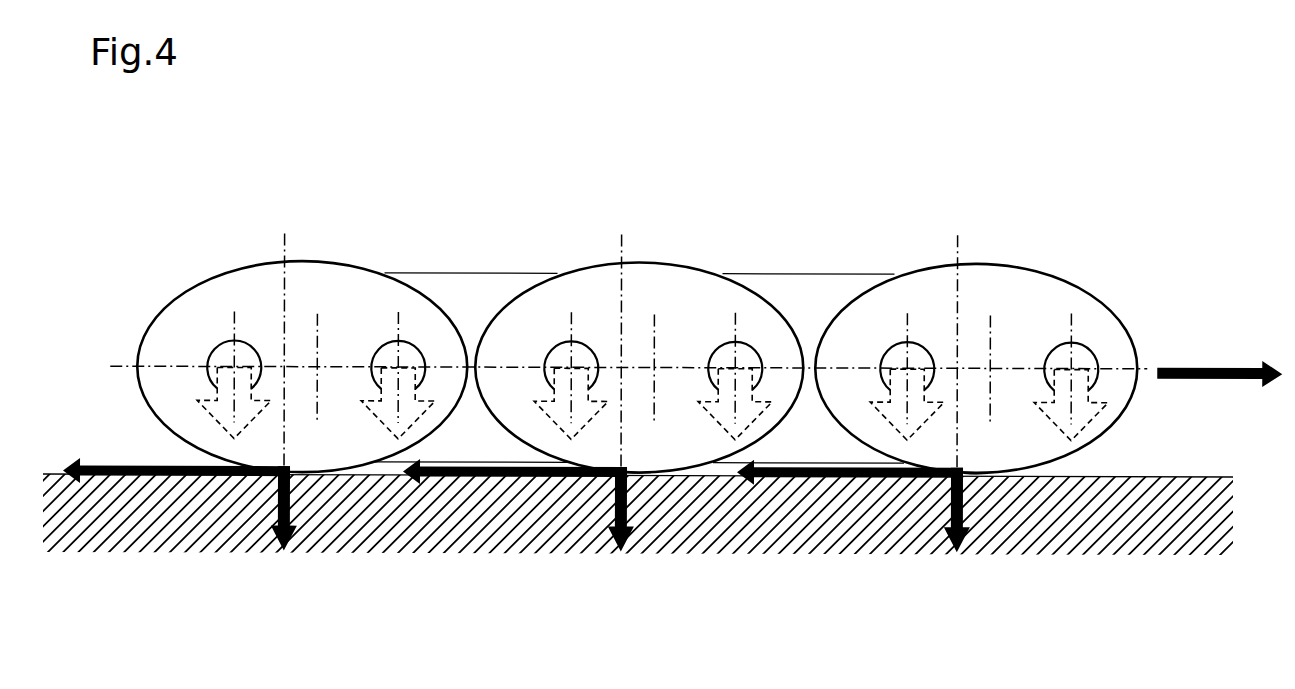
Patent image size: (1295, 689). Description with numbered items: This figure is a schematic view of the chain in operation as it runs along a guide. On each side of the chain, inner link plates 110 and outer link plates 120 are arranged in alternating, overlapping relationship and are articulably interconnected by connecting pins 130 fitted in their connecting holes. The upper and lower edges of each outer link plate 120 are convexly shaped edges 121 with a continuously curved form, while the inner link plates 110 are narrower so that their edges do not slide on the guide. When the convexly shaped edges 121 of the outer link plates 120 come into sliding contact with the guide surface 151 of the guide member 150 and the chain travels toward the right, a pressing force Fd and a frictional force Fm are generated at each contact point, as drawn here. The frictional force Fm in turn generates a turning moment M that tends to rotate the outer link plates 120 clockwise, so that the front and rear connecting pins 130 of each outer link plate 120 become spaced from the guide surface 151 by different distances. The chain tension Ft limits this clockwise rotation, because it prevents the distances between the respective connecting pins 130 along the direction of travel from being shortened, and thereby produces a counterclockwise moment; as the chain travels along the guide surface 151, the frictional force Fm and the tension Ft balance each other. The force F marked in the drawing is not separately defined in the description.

The inner link plate 110 is at (477, 297).
The outer link plate 120 is at (295, 280).
The convexly shaped edge 121 is at (375, 470).
The connecting pin 130 is at (223, 353).
The guide member 150 is at (1120, 517).
The guide surface 151 is at (1152, 477).
The turning moment M is at (398, 273).
The friction force F is at (432, 446).
The frictional force Fm is at (170, 477).
The pressing force Fd is at (619, 532).
The tension Ft is at (1219, 352).